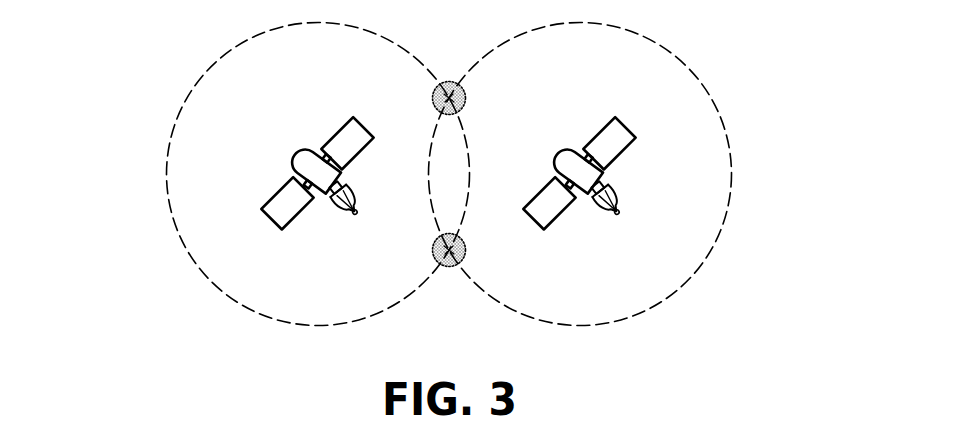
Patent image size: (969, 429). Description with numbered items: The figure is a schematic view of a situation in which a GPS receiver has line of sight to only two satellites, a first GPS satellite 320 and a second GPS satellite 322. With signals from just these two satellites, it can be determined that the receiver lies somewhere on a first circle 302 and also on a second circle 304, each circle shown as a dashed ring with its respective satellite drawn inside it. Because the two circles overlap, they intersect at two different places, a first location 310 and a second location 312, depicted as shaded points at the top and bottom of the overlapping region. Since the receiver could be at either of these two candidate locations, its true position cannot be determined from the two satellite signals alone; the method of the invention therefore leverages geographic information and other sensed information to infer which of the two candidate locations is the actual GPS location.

The first circle 302 is at (167, 175).
The second circle 304 is at (732, 176).
The first location 310 is at (447, 80).
The second location 312 is at (450, 267).
The first GPS satellite 320 is at (301, 159).
The second GPS satellite 322 is at (563, 159).